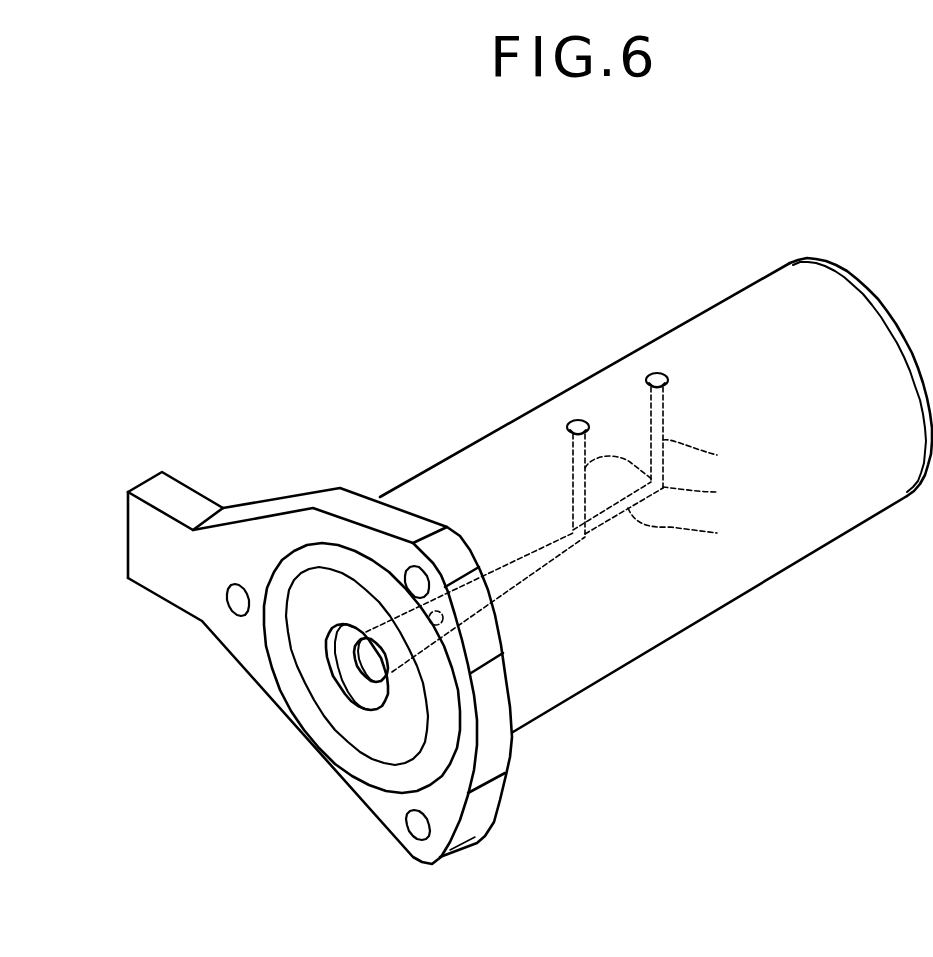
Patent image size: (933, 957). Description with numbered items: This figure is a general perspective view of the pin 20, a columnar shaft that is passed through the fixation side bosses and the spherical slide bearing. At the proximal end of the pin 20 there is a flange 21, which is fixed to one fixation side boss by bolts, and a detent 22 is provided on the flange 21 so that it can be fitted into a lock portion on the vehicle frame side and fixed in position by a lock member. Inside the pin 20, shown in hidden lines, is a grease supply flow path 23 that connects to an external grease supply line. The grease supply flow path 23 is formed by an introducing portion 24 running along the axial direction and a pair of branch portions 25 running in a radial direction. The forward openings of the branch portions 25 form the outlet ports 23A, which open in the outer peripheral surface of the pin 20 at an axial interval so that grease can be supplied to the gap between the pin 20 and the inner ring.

The pin 20 is at (575, 284).
The flange 21 is at (353, 498).
The detent 22 is at (118, 534).
The grease supply flow path 23 is at (750, 437).
The outlet ports 23A is at (649, 374).
The introducing portion 24 is at (688, 532).
The branch portions 25 is at (666, 474).